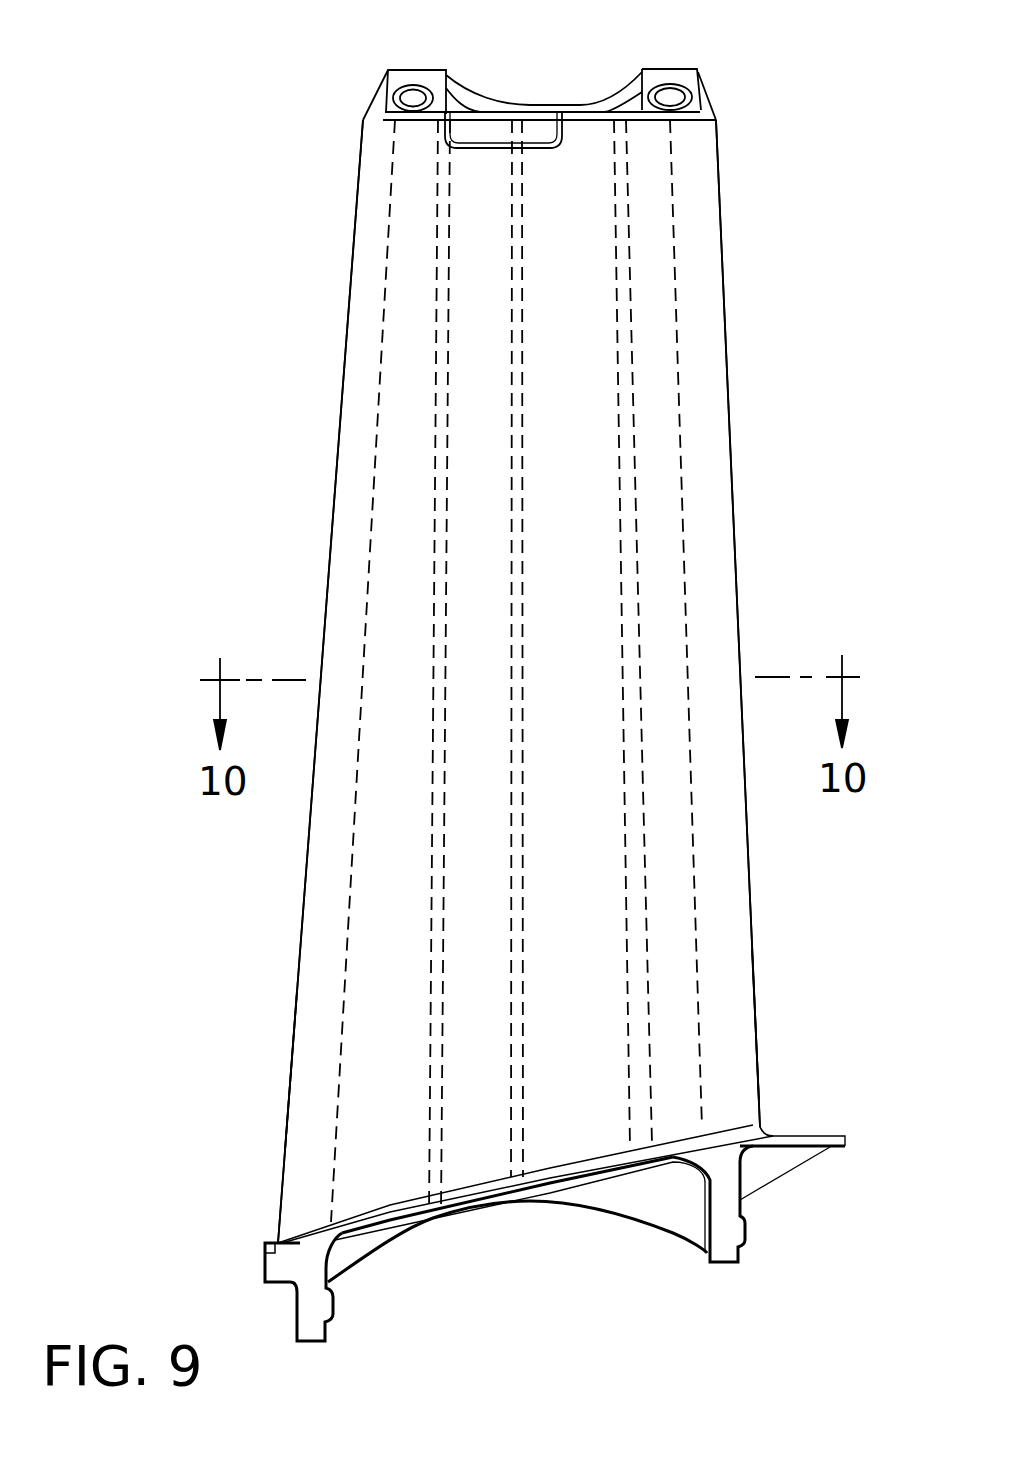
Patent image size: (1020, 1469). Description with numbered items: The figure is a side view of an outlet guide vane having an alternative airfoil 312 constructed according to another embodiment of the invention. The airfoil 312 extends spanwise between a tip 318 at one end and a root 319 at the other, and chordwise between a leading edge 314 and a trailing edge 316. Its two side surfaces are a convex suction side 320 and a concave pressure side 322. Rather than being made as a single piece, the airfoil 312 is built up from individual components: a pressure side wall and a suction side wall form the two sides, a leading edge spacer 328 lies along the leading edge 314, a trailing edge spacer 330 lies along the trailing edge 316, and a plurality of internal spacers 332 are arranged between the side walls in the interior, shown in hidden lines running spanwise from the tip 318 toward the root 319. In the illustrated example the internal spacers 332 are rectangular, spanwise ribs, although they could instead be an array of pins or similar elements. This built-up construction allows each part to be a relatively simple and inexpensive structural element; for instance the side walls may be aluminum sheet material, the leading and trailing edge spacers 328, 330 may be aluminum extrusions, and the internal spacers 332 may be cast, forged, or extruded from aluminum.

The airfoil 312 is at (697, 243).
The leading edge 314 is at (353, 217).
The trailing edge 316 is at (724, 336).
The tip 318 is at (575, 115).
The root 319 is at (670, 1140).
The convex suction side 320 is at (728, 1018).
The concave pressure side 322 is at (297, 1107).
The leading edge spacer 328 is at (378, 397).
The trailing edge spacer 330 is at (673, 282).
The internal spacers 332 is at (627, 190).